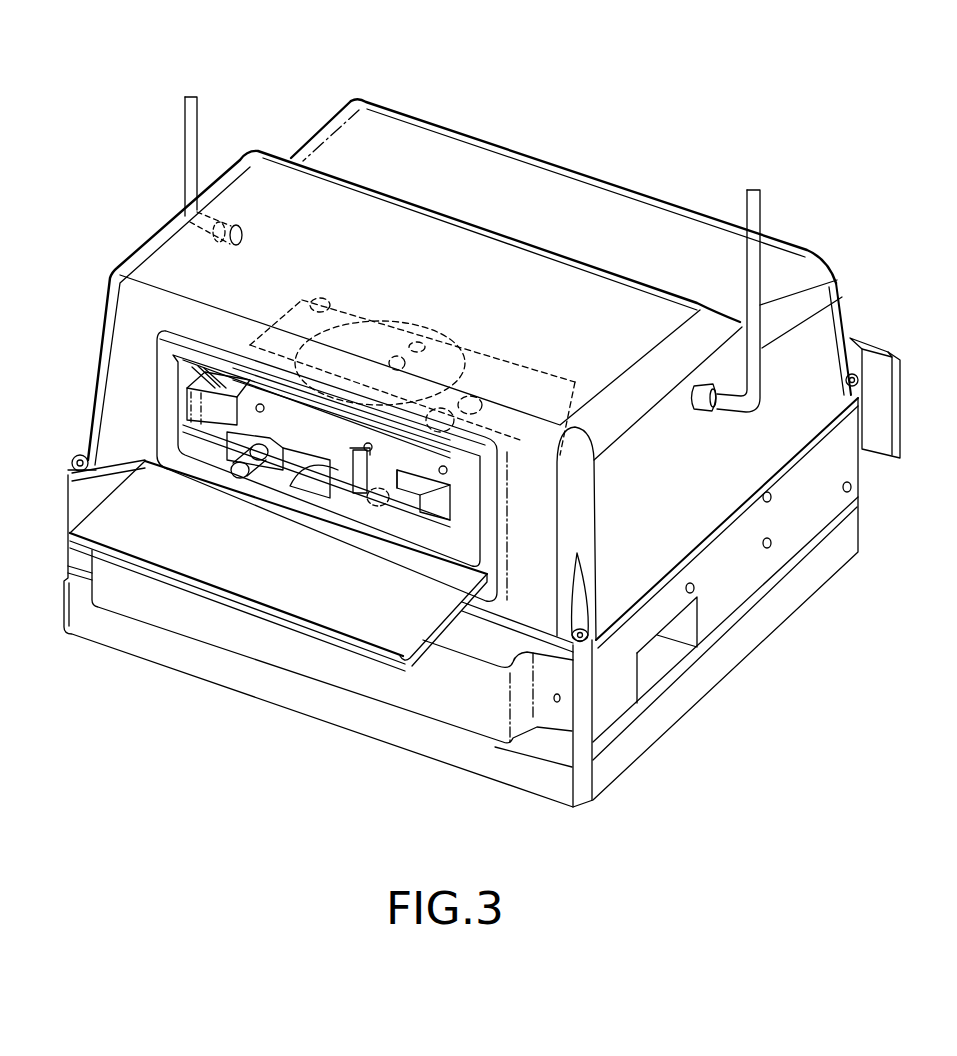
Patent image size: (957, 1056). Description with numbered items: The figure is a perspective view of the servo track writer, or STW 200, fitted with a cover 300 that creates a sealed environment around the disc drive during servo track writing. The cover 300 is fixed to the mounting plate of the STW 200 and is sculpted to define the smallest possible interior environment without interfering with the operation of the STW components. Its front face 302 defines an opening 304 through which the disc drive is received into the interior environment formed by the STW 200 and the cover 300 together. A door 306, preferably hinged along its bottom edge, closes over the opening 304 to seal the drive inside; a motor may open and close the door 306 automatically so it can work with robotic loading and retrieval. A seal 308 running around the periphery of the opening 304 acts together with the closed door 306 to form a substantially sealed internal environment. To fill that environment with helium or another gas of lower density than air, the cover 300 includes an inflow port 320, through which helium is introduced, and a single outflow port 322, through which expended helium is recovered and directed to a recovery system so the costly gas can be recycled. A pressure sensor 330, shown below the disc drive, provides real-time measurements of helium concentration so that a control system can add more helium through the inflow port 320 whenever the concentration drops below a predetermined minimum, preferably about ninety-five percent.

The STW 200 is at (260, 720).
The cover 300 is at (347, 90).
The front face 302 is at (543, 531).
The opening 304 is at (190, 437).
The door 306 is at (170, 560).
The seal 308 is at (163, 392).
The inflow port 320 is at (232, 222).
The outflow port 322 is at (703, 402).
The pressure sensor 330 is at (383, 502).